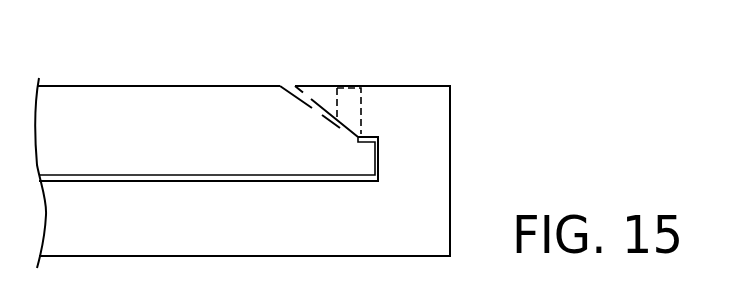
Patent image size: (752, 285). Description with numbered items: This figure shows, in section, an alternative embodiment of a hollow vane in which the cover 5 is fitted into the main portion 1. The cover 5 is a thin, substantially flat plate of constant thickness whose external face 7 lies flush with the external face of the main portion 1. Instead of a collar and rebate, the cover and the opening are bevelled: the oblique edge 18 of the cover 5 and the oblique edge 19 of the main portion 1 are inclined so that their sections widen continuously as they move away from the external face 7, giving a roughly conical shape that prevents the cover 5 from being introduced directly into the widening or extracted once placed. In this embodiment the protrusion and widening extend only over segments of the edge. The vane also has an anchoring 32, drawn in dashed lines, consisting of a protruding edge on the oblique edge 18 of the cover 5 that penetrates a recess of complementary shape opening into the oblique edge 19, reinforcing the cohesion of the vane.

The main portion 1 is at (440, 81).
The cover 5 is at (97, 76).
The external face 7 is at (168, 85).
The oblique edge 18 is at (314, 105).
The oblique edge 19 is at (323, 111).
The anchoring 32 is at (350, 86).